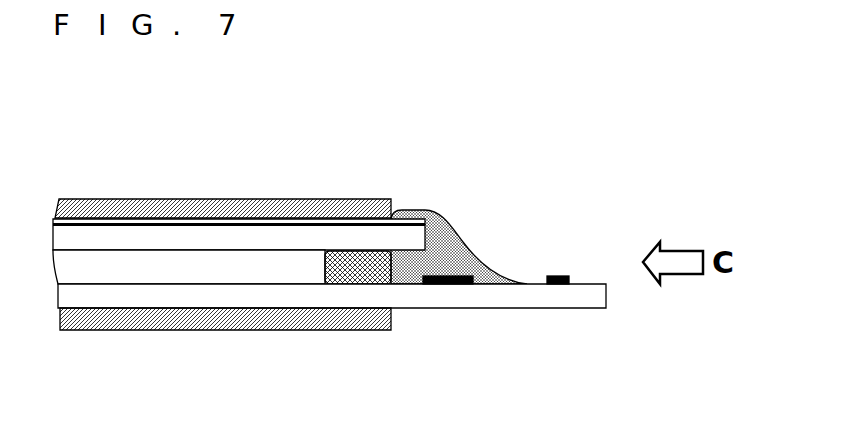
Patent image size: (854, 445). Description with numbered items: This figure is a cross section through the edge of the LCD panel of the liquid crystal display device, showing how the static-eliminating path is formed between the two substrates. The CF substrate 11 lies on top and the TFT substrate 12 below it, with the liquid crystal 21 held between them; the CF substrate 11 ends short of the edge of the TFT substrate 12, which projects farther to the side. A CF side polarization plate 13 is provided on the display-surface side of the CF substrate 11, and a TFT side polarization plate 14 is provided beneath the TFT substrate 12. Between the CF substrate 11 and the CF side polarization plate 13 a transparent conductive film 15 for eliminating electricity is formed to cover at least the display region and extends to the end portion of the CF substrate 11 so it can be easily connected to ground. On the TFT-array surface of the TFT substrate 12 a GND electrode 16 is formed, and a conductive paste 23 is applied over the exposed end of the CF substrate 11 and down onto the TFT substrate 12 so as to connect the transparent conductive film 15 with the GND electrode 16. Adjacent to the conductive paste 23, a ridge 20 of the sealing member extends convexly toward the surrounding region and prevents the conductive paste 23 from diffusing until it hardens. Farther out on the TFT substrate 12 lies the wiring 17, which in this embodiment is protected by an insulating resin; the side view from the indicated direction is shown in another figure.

The CF substrate 11 is at (153, 240).
The TFT substrate 12 is at (518, 310).
The CF side polarization plate 13 is at (227, 198).
The TFT side polarization plate 14 is at (302, 330).
The transparent conductive film 15 is at (190, 226).
The GND electrode 16 is at (478, 250).
The wiring 17 is at (565, 275).
The ridge 20 is at (377, 285).
The liquid crystal 21 is at (90, 272).
The conductive paste 23 is at (455, 223).